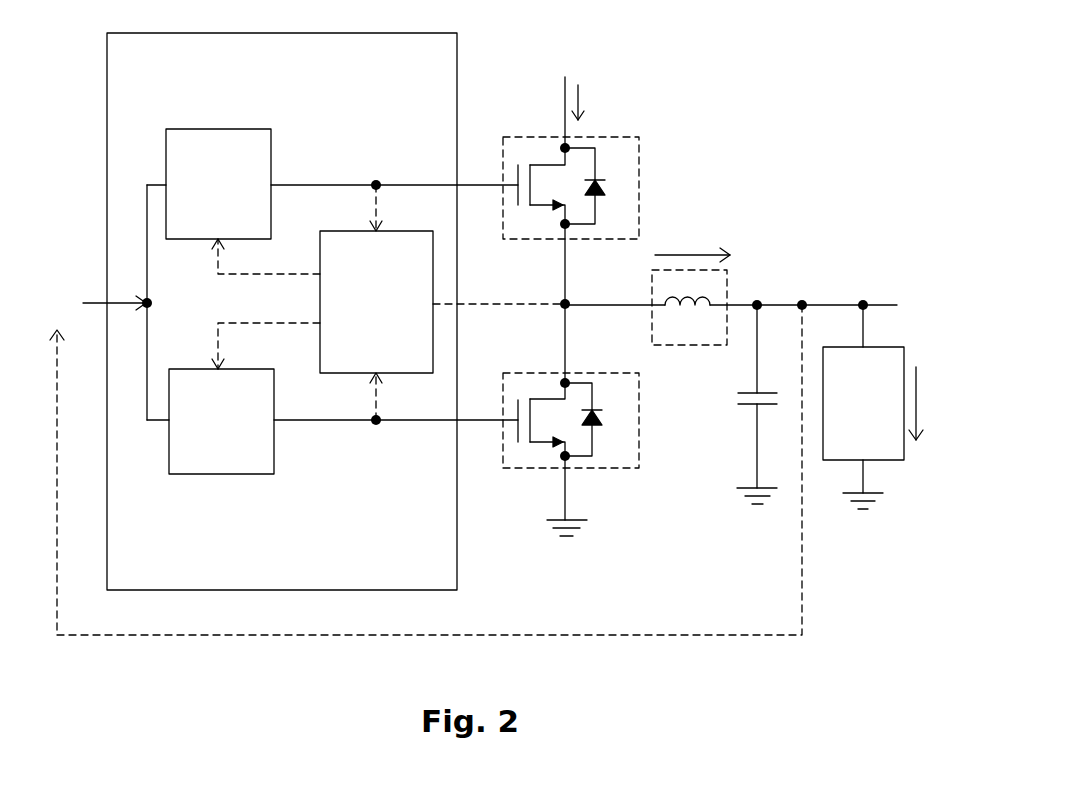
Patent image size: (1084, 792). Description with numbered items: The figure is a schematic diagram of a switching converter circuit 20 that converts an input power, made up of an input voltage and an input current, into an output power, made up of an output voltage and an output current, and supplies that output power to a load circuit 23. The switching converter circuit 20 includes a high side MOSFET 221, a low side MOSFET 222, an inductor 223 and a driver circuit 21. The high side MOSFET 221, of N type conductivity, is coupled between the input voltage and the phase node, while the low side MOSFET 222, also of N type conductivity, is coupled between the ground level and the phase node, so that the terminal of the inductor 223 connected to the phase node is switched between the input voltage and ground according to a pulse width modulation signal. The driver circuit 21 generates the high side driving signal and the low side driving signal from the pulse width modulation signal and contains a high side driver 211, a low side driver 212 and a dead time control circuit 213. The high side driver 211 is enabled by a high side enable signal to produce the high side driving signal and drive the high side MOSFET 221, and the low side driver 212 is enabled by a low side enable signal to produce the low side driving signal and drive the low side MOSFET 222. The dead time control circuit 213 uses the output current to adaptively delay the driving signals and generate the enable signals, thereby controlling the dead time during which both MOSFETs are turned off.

The switching converter circuit 20 is at (812, 24).
The driver circuit 21 is at (282, 311).
The high side driver 211 is at (218, 184).
The low side driver 212 is at (221, 421).
The dead time control circuit 213 is at (376, 302).
The high side MOSFET 221 is at (639, 175).
The low side MOSFET 222 is at (639, 432).
The inductor 223 is at (689, 307).
The load circuit 23 is at (863, 407).